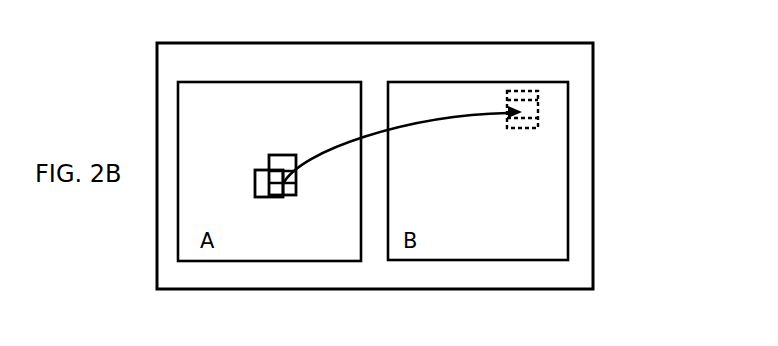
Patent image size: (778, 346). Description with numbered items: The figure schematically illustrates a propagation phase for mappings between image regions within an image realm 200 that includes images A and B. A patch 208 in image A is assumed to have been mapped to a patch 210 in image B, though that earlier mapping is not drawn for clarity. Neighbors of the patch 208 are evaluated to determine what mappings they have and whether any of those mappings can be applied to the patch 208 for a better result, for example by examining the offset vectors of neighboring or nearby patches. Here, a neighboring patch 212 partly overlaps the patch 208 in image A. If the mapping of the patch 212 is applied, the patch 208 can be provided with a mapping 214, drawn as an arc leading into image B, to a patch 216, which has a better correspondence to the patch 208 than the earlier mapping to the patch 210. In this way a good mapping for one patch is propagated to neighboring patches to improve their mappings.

The image realm 200 is at (594, 77).
The patch 208 is at (275, 155).
The patch 210 is at (522, 128).
The patch 212 is at (287, 198).
The mapping 214 is at (353, 138).
The patch 216 is at (522, 91).